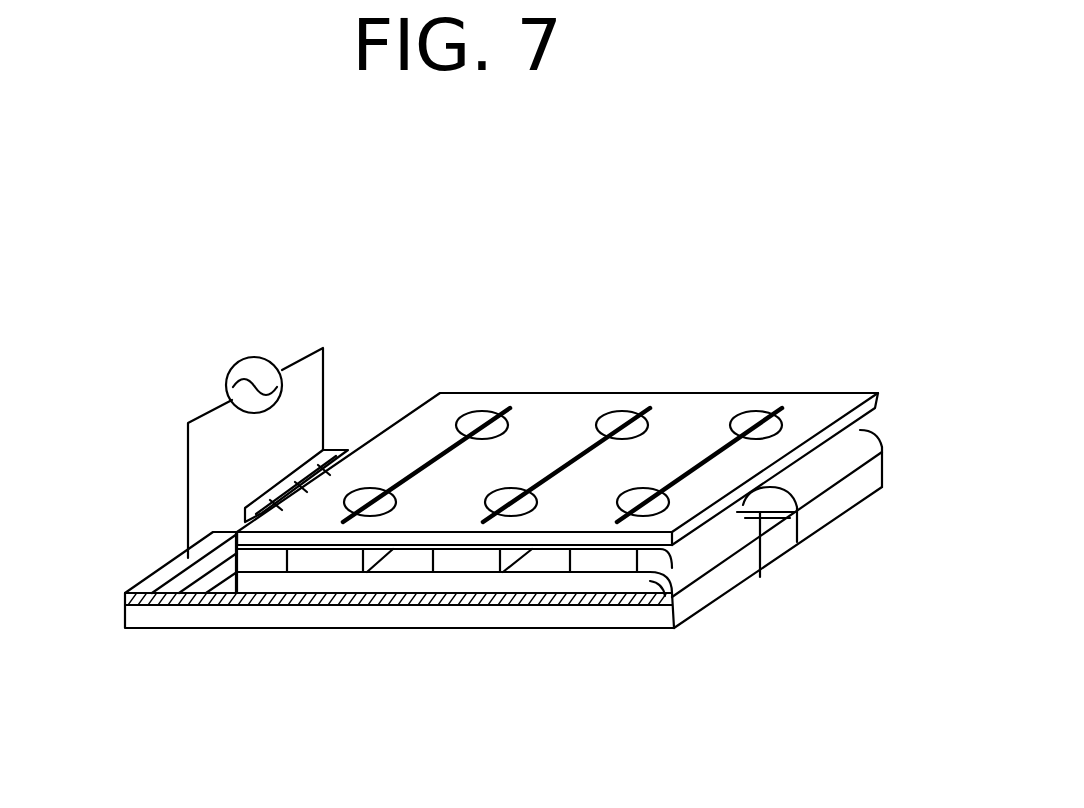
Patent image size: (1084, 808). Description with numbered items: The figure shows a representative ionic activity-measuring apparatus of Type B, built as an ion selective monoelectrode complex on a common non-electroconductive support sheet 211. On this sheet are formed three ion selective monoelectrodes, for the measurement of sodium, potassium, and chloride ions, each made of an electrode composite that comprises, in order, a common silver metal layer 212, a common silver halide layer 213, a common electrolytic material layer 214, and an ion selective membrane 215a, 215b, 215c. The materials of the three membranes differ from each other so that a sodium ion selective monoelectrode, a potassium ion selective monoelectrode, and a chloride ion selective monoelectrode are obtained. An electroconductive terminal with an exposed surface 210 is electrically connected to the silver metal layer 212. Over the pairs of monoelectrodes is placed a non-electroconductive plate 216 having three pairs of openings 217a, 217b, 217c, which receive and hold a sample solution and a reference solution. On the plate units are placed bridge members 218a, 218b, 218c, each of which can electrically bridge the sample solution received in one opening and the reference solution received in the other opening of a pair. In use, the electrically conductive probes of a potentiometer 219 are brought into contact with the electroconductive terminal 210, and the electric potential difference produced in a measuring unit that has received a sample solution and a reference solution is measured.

The exposed surface of electroconductive terminal 210 is at (167, 574).
The common non-electroconductive support sheet 211 is at (712, 590).
The common silver metal layer 212 is at (638, 610).
The common silver halide layer 213 is at (417, 597).
The common electrolytic material layer 214 is at (350, 582).
The ion selective membrane 215a is at (313, 563).
The ion selective membrane 215b is at (470, 563).
The ion selective membrane 215c is at (593, 563).
The non-electroconductive plate 216 is at (828, 405).
The openings 217a is at (370, 490).
The openings 217b is at (512, 488).
The openings 217c is at (650, 490).
The bridge member 218a is at (430, 457).
The bridge member 218b is at (565, 463).
The bridge member 218c is at (700, 460).
The potentiometer 219 is at (257, 357).